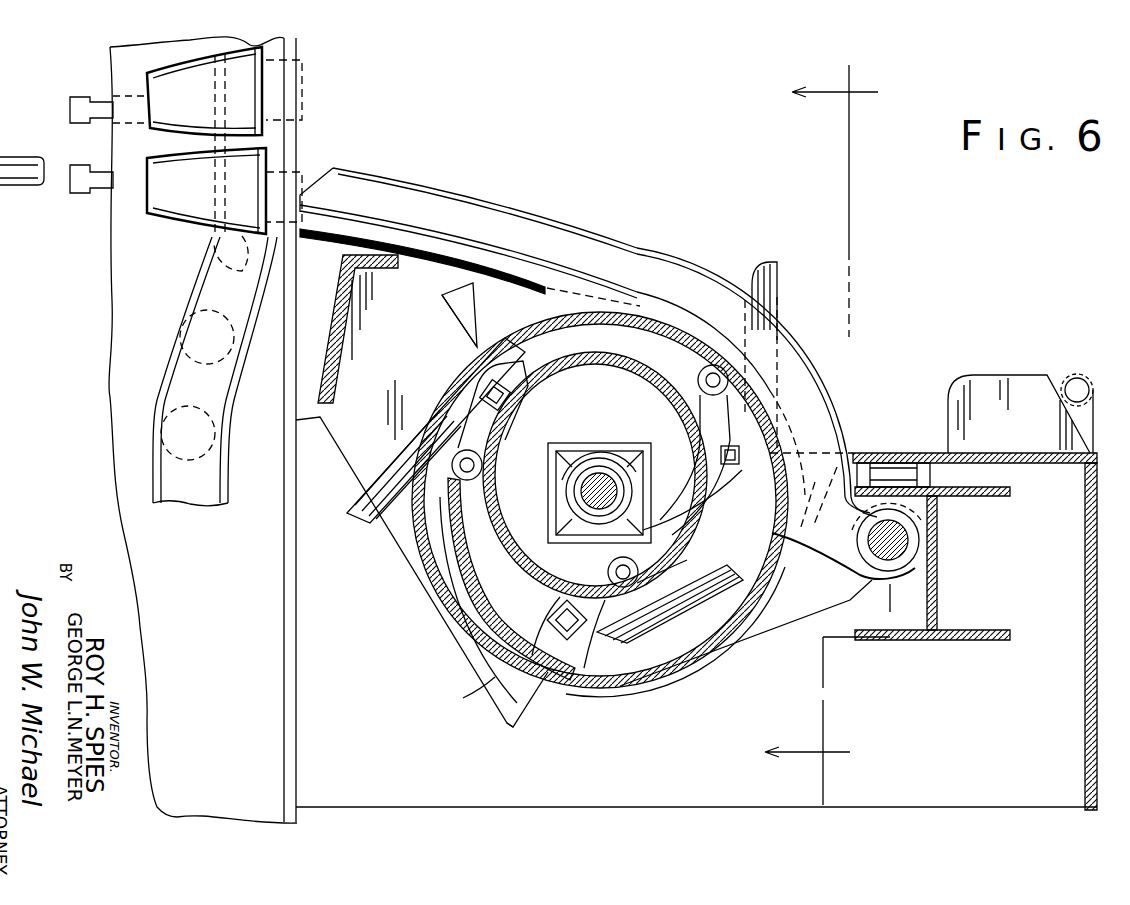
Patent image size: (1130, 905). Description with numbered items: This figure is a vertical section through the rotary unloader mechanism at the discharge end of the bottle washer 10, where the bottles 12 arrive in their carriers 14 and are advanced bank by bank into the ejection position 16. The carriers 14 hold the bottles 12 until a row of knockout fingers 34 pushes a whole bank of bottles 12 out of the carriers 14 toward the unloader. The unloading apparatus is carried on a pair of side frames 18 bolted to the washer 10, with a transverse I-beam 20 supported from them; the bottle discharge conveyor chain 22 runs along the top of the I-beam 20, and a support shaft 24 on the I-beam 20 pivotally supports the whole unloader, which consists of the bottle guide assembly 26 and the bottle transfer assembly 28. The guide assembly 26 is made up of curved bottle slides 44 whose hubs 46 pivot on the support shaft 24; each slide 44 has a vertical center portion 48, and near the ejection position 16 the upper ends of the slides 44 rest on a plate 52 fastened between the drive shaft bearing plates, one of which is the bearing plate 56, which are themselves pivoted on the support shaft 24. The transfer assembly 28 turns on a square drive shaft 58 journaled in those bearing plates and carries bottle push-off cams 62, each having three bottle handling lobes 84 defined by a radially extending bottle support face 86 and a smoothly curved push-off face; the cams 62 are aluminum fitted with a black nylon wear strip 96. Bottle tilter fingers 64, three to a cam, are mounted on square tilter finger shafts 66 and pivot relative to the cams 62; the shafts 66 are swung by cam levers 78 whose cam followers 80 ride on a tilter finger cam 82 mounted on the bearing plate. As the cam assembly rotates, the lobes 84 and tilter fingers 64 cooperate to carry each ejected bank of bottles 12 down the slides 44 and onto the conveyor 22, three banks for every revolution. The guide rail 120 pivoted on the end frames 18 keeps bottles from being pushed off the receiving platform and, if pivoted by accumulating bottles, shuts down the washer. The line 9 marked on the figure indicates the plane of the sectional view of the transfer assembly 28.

The section line 9- 9 is at (832, 418).
The bottle washer 10 is at (86, 342).
The bottles 12 is at (70, 113).
The carriers 14 is at (147, 75).
The ejection position 16 is at (331, 156).
The side frames 18 is at (390, 718).
The transverse I-beam 20 is at (1005, 640).
The bottle discharge conveyor chain 22 is at (900, 453).
The support shaft 24 is at (900, 540).
The bottle guide assembly 26 is at (590, 204).
The bottle transfer assembly 28 is at (418, 611).
The knockout fingers 34 is at (25, 187).
The curved bottle slides 44 is at (493, 216).
The hubs 46 is at (900, 575).
The vertical center portion 48 is at (632, 240).
The plate 52 is at (336, 345).
The drive shaft bearing plate 56 is at (424, 319).
The square drive shaft 58 is at (601, 442).
The bottle push-off cams 62 is at (470, 659).
The bottle tilter fingers 64 is at (780, 258).
The square tilter finger shafts 66 is at (520, 382).
The cam levers 78 is at (500, 437).
The cam followers 80 is at (482, 482).
The tilter finger cam 82 is at (652, 370).
The bottle handling lobes 84 is at (487, 312).
The bottle support face 86 is at (460, 325).
The wear strip 96 is at (504, 726).
The guide rail 120 is at (1072, 378).